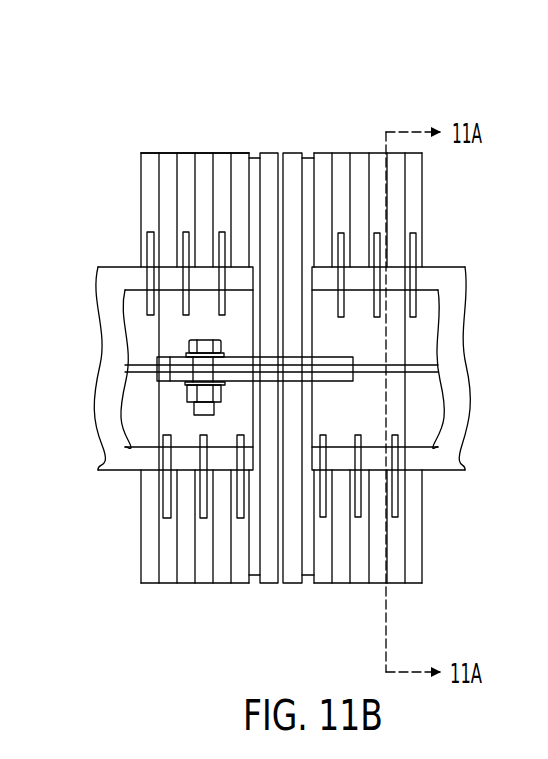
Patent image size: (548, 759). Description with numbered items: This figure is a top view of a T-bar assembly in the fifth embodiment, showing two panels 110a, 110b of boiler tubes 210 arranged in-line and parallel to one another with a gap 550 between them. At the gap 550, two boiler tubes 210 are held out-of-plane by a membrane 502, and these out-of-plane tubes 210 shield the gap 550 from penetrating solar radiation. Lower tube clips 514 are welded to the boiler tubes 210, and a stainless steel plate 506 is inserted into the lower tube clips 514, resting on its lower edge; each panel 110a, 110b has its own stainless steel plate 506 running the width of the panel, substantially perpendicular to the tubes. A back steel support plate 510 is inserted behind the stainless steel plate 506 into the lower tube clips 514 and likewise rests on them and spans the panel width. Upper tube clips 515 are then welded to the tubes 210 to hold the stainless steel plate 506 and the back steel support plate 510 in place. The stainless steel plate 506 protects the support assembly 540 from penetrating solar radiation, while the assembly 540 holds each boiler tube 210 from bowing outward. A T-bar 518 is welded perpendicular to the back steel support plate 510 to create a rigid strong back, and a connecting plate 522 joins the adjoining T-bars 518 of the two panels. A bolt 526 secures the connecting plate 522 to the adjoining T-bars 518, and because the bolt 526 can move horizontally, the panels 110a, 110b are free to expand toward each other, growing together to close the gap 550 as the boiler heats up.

The panel 110a is at (198, 108).
The panel 110b is at (402, 85).
The gap 550 is at (288, 120).
The boiler tubes 210 is at (188, 158).
The membrane 502 is at (255, 590).
The stainless steel plate 506 is at (115, 460).
The support assembly 540 is at (433, 257).
The back steel support plate 510 is at (422, 407).
The upper tube clips 515 is at (222, 245).
The lower tube clips 514 is at (393, 517).
The T-bar 518 is at (135, 368).
The connecting plate 522 is at (175, 373).
The bolt 526 is at (185, 350).